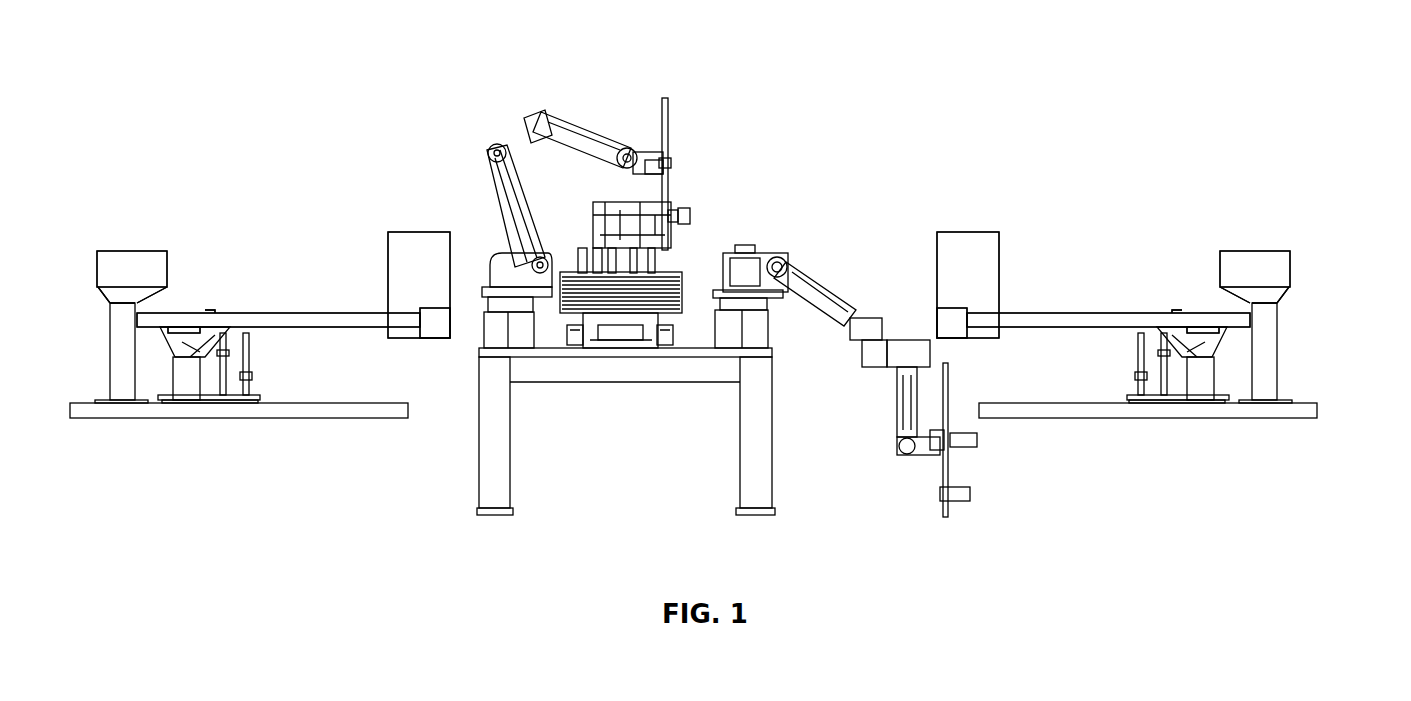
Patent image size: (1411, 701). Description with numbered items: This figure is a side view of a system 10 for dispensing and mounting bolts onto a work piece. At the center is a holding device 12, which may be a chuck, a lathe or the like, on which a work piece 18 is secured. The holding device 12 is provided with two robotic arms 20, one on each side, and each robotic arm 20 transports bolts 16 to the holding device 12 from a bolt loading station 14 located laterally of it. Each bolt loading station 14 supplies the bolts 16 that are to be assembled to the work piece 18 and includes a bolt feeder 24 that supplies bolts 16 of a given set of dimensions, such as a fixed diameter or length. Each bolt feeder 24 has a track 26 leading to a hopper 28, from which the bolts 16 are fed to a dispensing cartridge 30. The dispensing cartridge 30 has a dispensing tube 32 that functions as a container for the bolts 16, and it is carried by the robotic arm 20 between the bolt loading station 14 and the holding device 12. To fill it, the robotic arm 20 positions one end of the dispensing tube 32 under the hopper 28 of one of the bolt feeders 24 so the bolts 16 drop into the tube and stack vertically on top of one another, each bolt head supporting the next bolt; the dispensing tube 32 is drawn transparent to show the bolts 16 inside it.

The system 10 is at (163, 73).
The holding device 12 is at (640, 395).
The bolt loading station 14 is at (338, 258).
The bolts 16 is at (660, 110).
The work piece 18 is at (668, 258).
The robotic arm 20 is at (578, 120).
The bolt feeder 24 is at (133, 242).
The track 26 is at (336, 328).
The hopper 28 is at (432, 342).
The dispensing cartridge 30 is at (672, 130).
The dispensing tube 32 is at (670, 185).